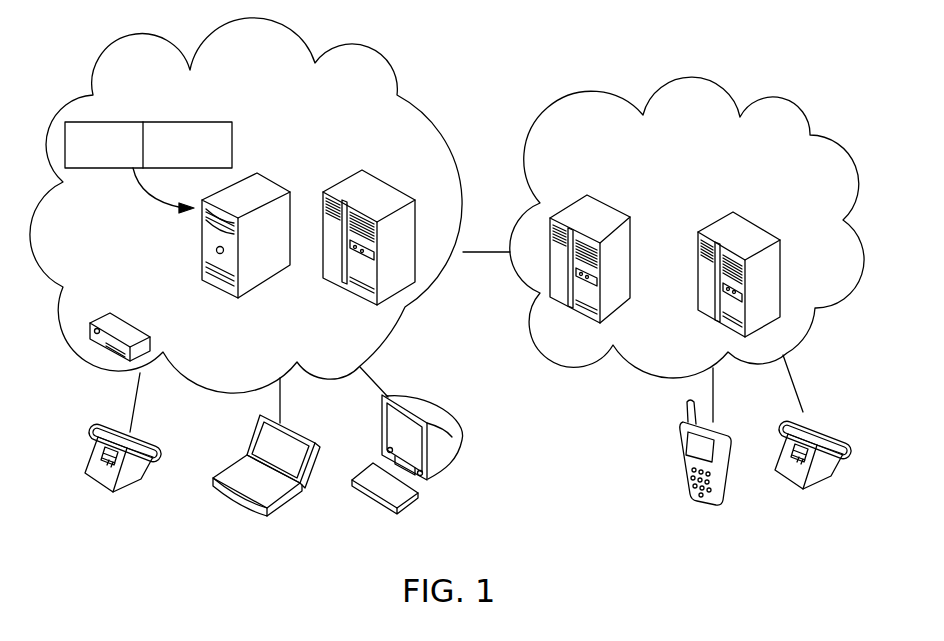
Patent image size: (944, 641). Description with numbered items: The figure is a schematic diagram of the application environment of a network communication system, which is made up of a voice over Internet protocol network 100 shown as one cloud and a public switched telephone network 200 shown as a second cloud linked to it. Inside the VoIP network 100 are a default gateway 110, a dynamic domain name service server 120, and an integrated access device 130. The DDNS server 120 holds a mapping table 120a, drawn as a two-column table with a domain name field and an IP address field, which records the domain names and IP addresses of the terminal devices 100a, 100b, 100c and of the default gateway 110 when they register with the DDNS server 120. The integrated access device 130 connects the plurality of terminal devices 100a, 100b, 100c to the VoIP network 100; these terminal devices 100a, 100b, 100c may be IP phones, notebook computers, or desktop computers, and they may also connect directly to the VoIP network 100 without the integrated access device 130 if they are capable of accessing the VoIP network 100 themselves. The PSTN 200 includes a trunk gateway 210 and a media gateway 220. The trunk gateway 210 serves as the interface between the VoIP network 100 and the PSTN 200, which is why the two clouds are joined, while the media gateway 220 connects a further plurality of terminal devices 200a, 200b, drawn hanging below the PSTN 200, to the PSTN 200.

The voice over Internet protocol (VoIP) network 100 is at (283, 33).
The default gateway 110 is at (345, 178).
The dynamic domain name service (DDNS) server 120 is at (268, 178).
The mapping table 120a is at (93, 122).
The integrated access device (IAD) 130 is at (131, 325).
The terminal device 100a is at (122, 494).
The terminal device 100b is at (282, 507).
The terminal device 100c is at (437, 474).
The public switched telephone network (PSTN) 200 is at (712, 80).
The trunk gateway 210 is at (603, 205).
The media gateway 220 is at (757, 226).
The terminal device 200a is at (716, 506).
The terminal device 200b is at (833, 478).